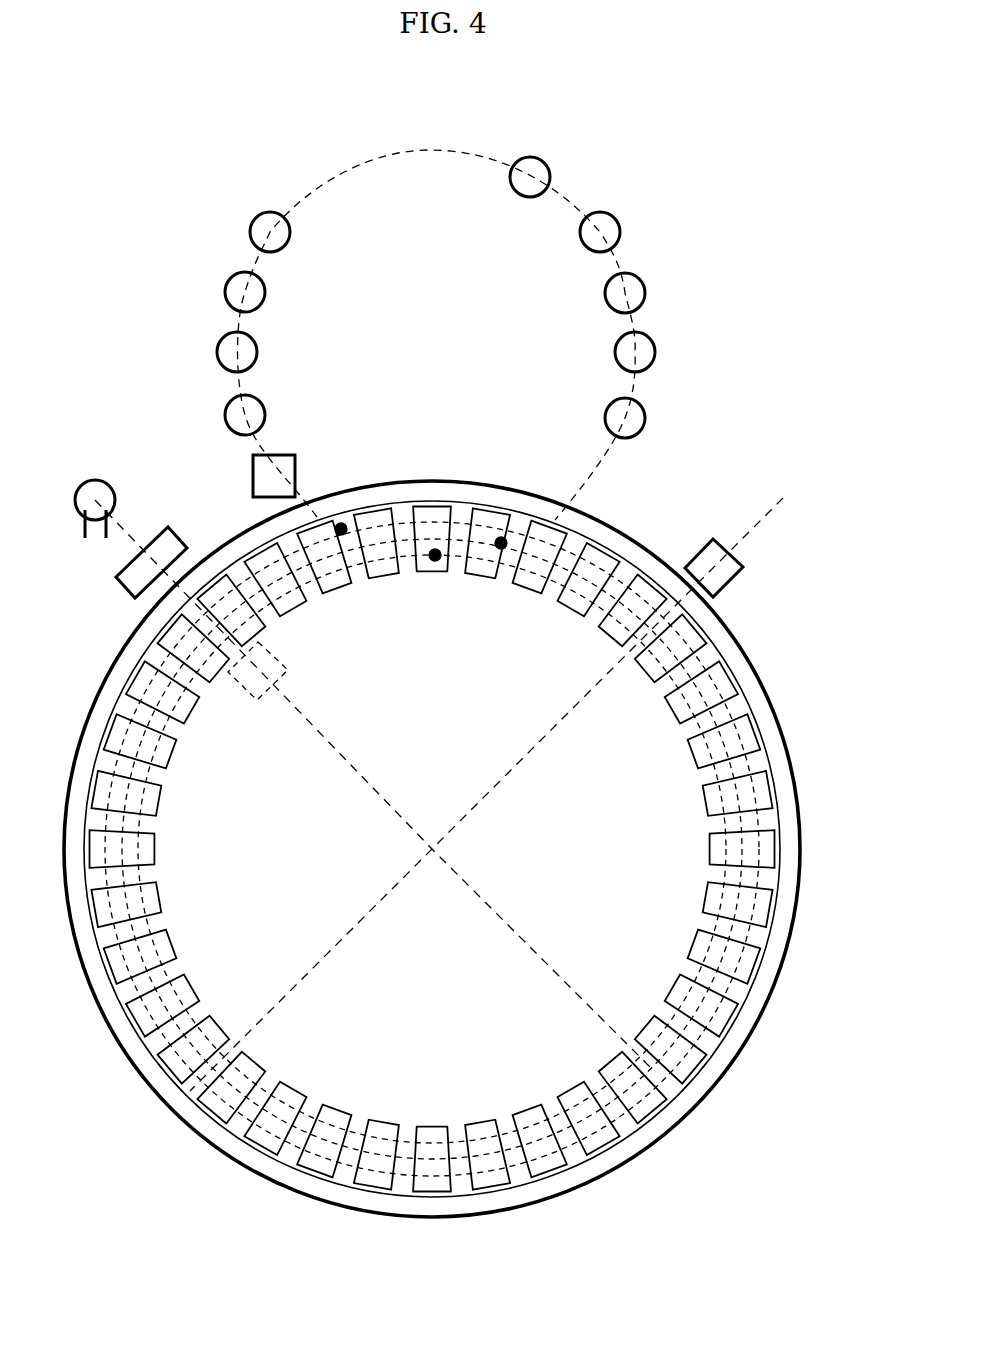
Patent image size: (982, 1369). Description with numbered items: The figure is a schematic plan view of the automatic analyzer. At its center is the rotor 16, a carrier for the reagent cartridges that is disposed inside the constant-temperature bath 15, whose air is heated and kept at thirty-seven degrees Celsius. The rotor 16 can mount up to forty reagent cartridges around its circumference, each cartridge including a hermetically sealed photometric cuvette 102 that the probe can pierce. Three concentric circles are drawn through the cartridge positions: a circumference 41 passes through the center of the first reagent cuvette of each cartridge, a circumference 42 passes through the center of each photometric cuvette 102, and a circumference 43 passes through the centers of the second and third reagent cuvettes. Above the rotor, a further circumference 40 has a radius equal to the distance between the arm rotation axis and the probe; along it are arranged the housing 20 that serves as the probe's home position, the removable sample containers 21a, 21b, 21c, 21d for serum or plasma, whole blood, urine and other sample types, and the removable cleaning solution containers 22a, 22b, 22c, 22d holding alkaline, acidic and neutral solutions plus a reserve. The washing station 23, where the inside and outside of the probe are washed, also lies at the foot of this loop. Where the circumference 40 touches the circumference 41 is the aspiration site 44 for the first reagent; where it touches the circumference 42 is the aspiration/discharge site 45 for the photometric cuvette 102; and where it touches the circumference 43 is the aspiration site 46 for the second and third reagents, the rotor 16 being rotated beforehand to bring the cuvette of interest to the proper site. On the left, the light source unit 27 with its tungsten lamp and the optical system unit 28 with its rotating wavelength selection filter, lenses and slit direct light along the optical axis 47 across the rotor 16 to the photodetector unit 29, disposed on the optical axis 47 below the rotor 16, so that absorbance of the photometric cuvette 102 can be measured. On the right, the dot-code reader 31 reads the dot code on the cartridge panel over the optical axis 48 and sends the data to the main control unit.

The constant-temperature bath 15 is at (738, 635).
The rotor 16 is at (765, 732).
The photometric cuvette 102 is at (621, 590).
The circumference 43 is at (758, 794).
The circumference 42 is at (745, 847).
The circumference 41 is at (720, 898).
The optical axis 47 is at (312, 720).
The optical axis 48 is at (548, 724).
The photodetector unit 29 is at (283, 660).
The light source unit 27 is at (88, 515).
The optical system unit 28 is at (130, 578).
The dot-code reader 31 is at (722, 556).
The washing station 23 is at (288, 468).
The circumference 40 is at (367, 162).
The housing 20 is at (541, 158).
The cleaning solution container 22d is at (250, 222).
The cleaning solution container 22c is at (228, 288).
The cleaning solution container 22b is at (218, 350).
The cleaning solution container 22a is at (226, 408).
The sample container 21d is at (620, 226).
The sample container 21c is at (645, 290).
The sample container 21b is at (655, 350).
The sample container 21a is at (645, 410).
The aspiration site 46 is at (342, 528).
The aspiration site 44 is at (436, 553).
The aspiration/discharge site 45 is at (502, 542).